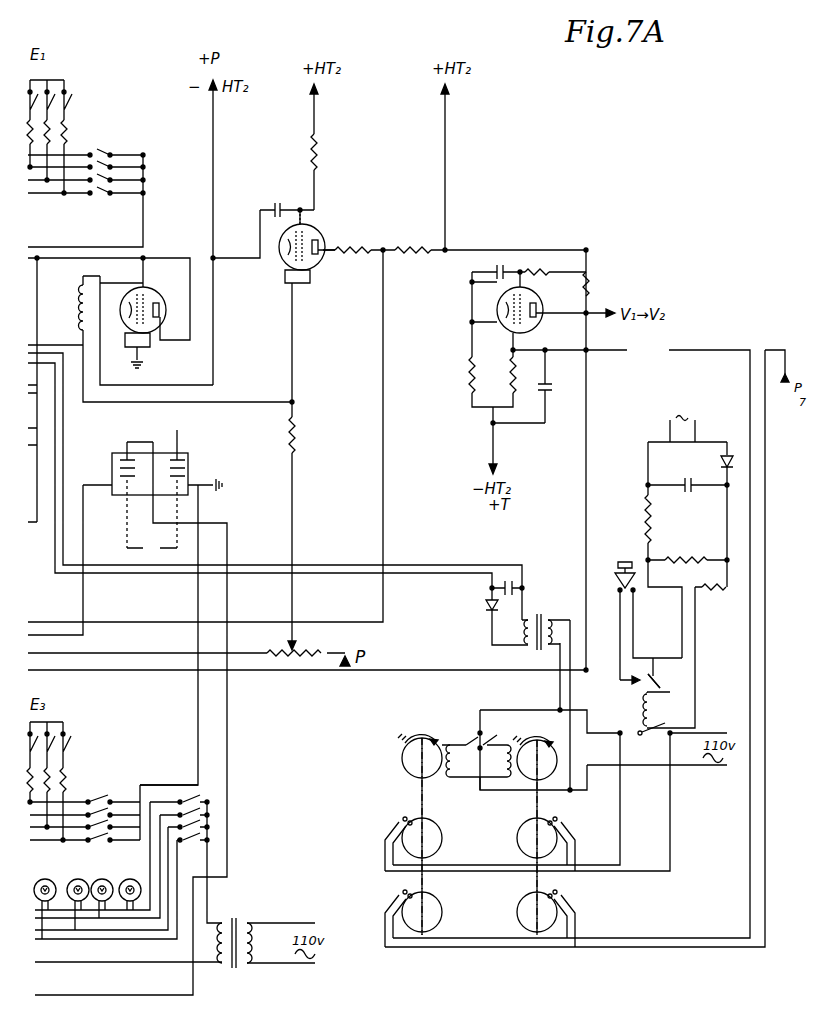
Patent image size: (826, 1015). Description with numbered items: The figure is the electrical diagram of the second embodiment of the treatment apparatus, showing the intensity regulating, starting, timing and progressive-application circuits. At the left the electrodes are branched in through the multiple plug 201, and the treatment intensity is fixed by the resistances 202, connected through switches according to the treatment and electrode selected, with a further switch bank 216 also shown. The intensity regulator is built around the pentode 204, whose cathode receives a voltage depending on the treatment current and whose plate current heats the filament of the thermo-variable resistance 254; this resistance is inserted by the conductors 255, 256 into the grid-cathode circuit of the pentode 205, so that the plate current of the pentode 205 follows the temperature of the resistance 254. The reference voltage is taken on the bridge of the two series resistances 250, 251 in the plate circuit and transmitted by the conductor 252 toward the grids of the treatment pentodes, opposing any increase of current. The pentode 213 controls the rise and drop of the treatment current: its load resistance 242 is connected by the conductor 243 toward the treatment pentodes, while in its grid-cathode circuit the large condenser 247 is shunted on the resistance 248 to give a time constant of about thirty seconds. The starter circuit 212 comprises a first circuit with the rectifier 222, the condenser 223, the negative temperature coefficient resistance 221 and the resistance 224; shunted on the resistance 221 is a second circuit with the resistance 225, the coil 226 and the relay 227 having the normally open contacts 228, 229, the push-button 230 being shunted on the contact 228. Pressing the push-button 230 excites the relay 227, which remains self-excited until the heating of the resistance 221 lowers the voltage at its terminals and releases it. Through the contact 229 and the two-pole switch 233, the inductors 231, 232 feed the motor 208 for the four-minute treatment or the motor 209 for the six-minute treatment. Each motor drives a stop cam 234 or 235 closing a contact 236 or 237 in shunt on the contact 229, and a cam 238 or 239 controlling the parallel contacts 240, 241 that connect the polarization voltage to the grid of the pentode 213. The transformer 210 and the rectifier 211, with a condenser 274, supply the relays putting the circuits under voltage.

The selector switch bank E1 216 is at (54, 76).
The pentode 204 is at (138, 290).
The thermo-variable resistance 254 is at (80, 320).
The conductor 255 is at (232, 316).
The conductor 256 is at (260, 264).
The pentode 205 is at (318, 242).
The resistance 250 is at (364, 254).
The resistance 251 is at (428, 254).
The conductor 252 is at (382, 399).
The pentode 213 is at (530, 300).
The load resistance 242 is at (588, 294).
The resistance 248 is at (506, 374).
The condenser 247 is at (564, 388).
The conductor 243 is at (590, 404).
The starter circuit 212 is at (728, 520).
The rectifier 222 is at (720, 464).
The condenser 223 is at (684, 492).
The resistance 224 is at (642, 522).
The resistance 221 is at (684, 562).
The resistance 225 is at (718, 590).
The push-button 230 is at (618, 568).
The relay 227 is at (656, 691).
The contact 228 is at (642, 686).
The coil 226 is at (648, 724).
The contact 229 is at (656, 738).
The capacitor 274 is at (514, 588).
The rectifier 211 is at (486, 611).
The transformer 210 is at (532, 616).
The motor 208 is at (402, 752).
The motor 209 is at (560, 746).
The inductor 231 is at (454, 743).
The two-pole switch 233 is at (488, 743).
The inductor 232 is at (500, 766).
The stop cam 234 is at (432, 832).
The stop cam 235 is at (524, 830).
The cam for progressive application and suppression of the current 238 is at (432, 905).
The cam for progressive application and suppression of the current 239 is at (524, 905).
The contact 236 is at (400, 818).
The contact 237 is at (562, 820).
The contact 240 is at (400, 892).
The contact 241 is at (562, 894).
The multiple plug 201 is at (188, 456).
The resistances 202 is at (78, 746).